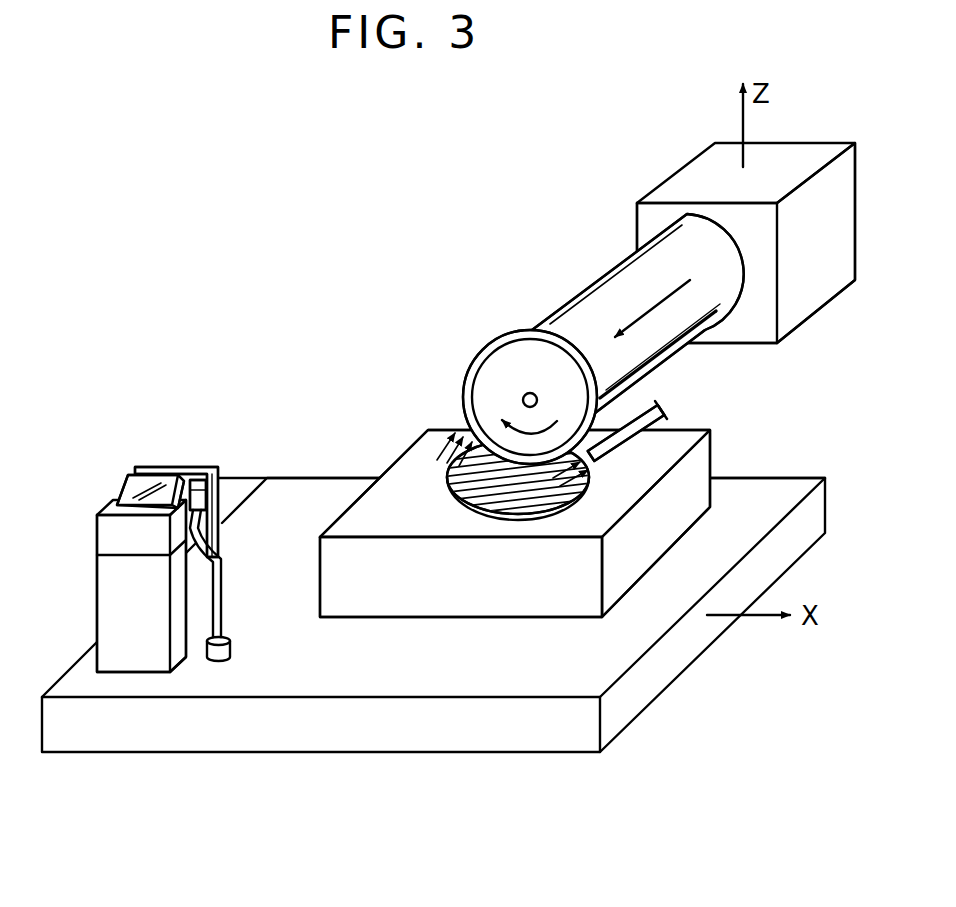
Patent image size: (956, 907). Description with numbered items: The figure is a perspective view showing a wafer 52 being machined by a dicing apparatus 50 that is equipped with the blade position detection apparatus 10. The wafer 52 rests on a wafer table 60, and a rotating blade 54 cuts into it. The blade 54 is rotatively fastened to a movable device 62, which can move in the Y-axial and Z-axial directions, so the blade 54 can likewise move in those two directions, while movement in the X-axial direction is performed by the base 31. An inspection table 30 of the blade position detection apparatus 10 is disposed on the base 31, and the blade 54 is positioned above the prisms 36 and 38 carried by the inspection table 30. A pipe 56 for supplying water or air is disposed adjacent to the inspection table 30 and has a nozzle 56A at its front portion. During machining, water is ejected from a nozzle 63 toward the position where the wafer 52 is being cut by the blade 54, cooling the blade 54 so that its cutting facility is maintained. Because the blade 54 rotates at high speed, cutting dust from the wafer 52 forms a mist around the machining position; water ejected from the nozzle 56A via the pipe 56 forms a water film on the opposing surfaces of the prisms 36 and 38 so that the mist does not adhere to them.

The blade position detection apparatus 10 is at (218, 424).
The inspection table 30 is at (117, 602).
The base 31 is at (667, 665).
The prism 36 is at (130, 492).
The prism 38 is at (172, 466).
The dicing apparatus 50 is at (580, 262).
The wafer 52 is at (452, 456).
The blade 54 is at (490, 348).
The pipe 56 is at (222, 587).
The nozzle 56A is at (208, 488).
The wafer table 60 is at (698, 462).
The movable device 62 is at (823, 287).
The nozzle 63 is at (667, 413).